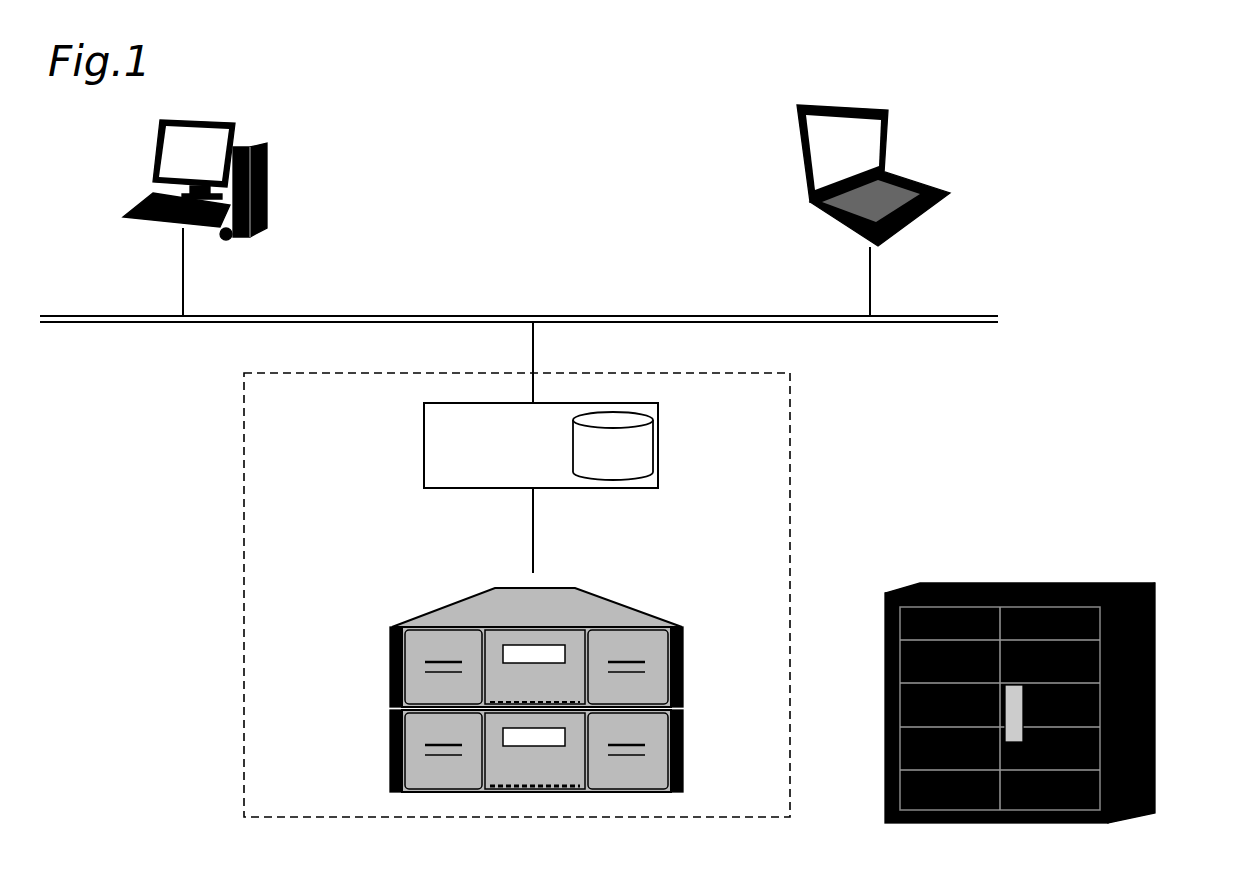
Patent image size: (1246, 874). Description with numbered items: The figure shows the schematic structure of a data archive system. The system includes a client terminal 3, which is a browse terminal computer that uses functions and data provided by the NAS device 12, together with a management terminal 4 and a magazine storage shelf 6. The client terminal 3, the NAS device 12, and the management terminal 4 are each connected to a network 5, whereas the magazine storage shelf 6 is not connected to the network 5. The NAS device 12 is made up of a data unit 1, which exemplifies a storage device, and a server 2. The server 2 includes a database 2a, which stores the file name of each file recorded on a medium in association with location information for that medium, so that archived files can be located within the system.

The data unit 1 is at (390, 678).
The server 2 is at (556, 447).
The database 2a is at (640, 450).
The client terminal 3 is at (268, 197).
The management terminal 4 is at (931, 185).
The network 5 is at (81, 316).
The magazine storage shelf 6 is at (1158, 658).
The NAS device 12 is at (245, 717).